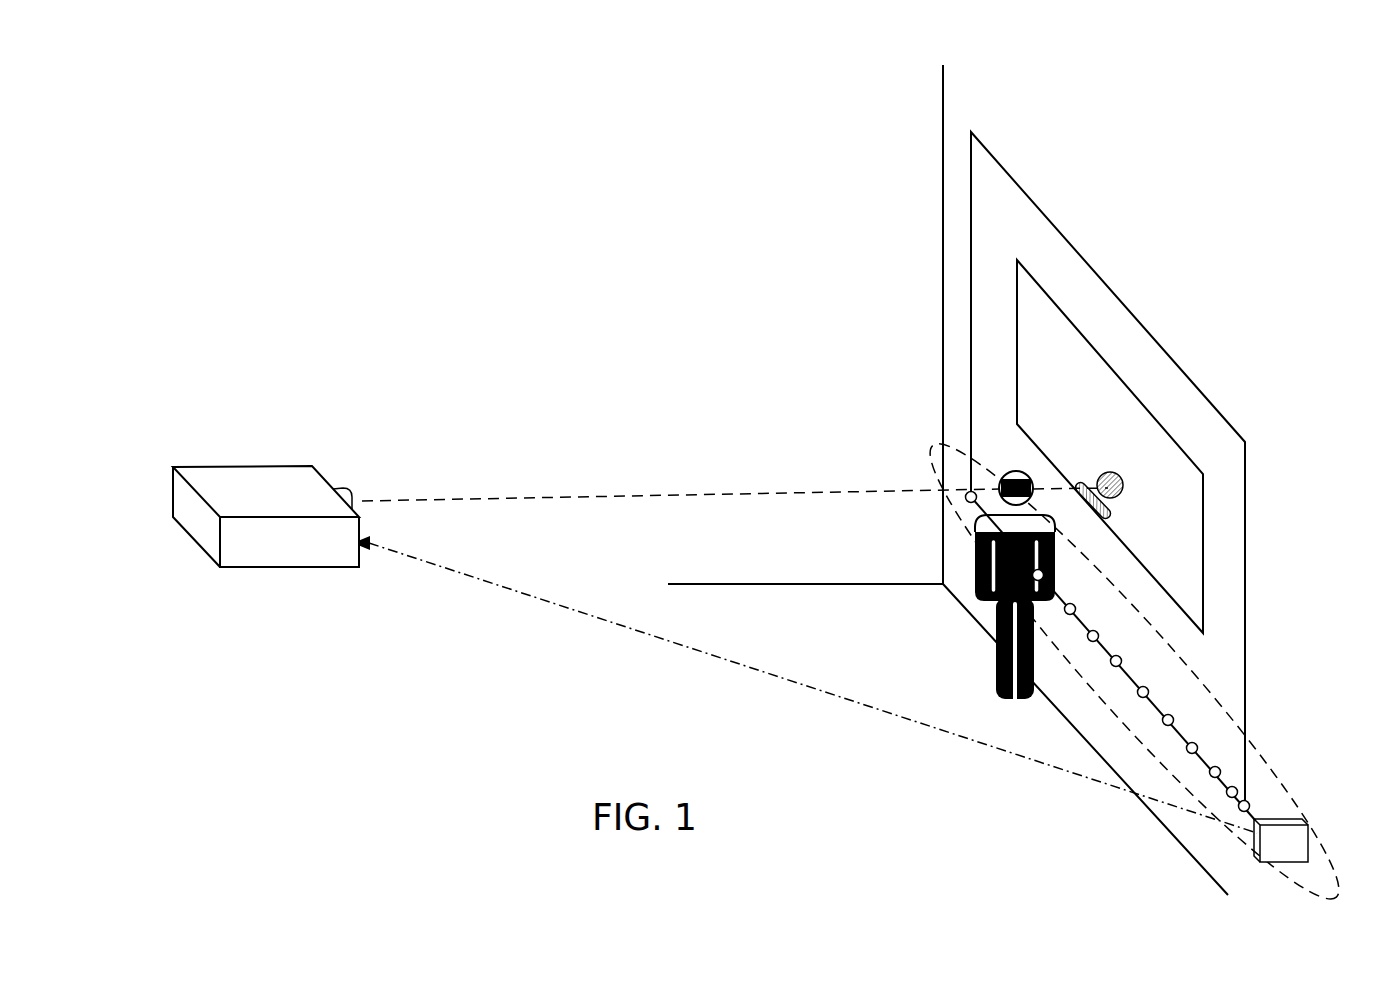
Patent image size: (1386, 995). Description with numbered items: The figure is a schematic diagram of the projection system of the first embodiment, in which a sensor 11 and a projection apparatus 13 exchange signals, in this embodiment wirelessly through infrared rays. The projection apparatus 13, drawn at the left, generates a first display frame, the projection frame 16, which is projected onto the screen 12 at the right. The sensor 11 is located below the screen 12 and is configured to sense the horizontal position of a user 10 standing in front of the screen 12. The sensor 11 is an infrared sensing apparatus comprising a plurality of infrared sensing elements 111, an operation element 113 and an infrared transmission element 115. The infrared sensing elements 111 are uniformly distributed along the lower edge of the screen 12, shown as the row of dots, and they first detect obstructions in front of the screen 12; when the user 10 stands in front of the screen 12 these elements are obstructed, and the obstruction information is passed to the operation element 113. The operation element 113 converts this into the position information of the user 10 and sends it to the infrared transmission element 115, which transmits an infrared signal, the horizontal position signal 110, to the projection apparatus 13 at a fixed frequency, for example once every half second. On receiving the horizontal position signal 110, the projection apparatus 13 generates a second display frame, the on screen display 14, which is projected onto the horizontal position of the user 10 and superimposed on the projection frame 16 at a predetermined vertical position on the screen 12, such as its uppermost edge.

The user 10 is at (1012, 664).
The sensor 11 is at (1285, 788).
The screen 12 is at (1187, 374).
The projection apparatus 13 is at (213, 463).
The on screen display 14 is at (1013, 477).
The projection frame 16 is at (1095, 345).
The horizontal position signal 110 is at (838, 682).
The infrared sensing elements 111 is at (1238, 790).
The operation element 113 is at (1303, 818).
The infrared transmission element 115 is at (1313, 819).